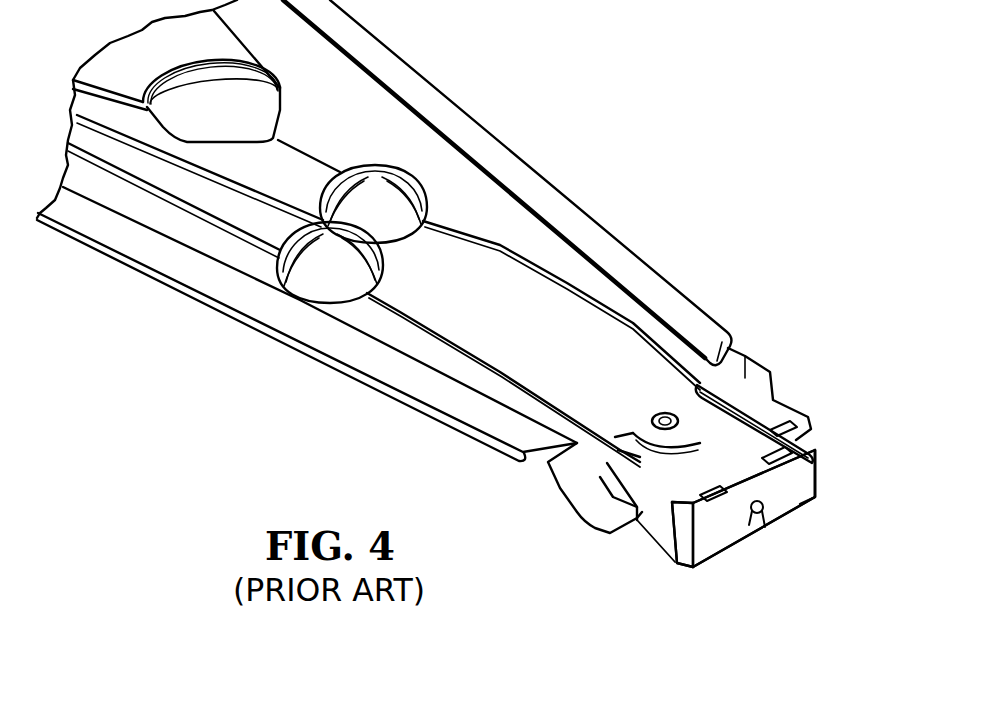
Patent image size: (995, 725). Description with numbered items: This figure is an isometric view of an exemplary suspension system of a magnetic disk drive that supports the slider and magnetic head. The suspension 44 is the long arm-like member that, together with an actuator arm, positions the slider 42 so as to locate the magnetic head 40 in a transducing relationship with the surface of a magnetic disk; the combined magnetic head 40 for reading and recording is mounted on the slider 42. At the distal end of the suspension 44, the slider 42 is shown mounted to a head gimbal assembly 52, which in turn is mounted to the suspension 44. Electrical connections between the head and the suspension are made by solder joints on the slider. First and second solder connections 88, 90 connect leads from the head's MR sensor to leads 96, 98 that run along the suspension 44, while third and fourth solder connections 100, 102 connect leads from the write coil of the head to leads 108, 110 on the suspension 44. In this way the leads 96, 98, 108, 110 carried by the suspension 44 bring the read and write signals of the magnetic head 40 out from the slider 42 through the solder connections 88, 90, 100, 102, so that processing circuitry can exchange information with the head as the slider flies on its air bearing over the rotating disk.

The magnetic head 40 is at (764, 530).
The slider 42 is at (642, 539).
The suspension 44 is at (553, 180).
The head gimbal assembly 52 is at (707, 458).
The first solder connection 88 is at (677, 527).
The second solder connection 90 is at (794, 452).
The lead 96 is at (417, 327).
The lead 98 is at (615, 317).
The third solder connection 100 is at (722, 507).
The fourth solder connection 102 is at (818, 495).
The lead 108 is at (440, 327).
The lead 110 is at (523, 268).